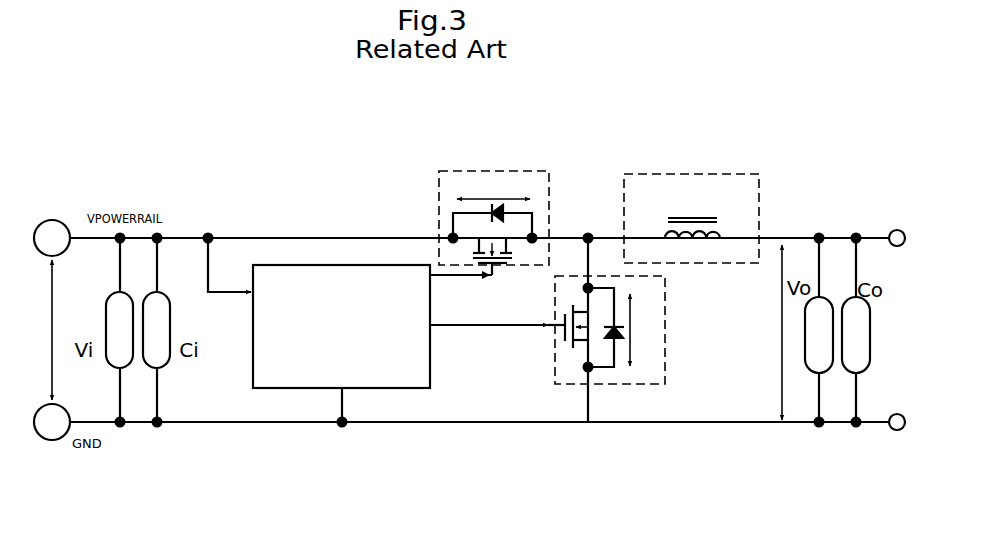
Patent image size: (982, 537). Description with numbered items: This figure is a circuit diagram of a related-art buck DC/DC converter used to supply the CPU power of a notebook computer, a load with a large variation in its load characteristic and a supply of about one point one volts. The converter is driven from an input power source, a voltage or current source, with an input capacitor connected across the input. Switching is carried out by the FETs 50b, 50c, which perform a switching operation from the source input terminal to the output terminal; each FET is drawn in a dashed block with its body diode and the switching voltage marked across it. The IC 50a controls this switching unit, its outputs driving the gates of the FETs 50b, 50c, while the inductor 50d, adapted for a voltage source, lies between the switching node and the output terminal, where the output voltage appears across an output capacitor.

The IC 50a is at (400, 388).
The FET 50b is at (438, 199).
The FET 50c is at (665, 357).
The inductor 50d is at (655, 174).